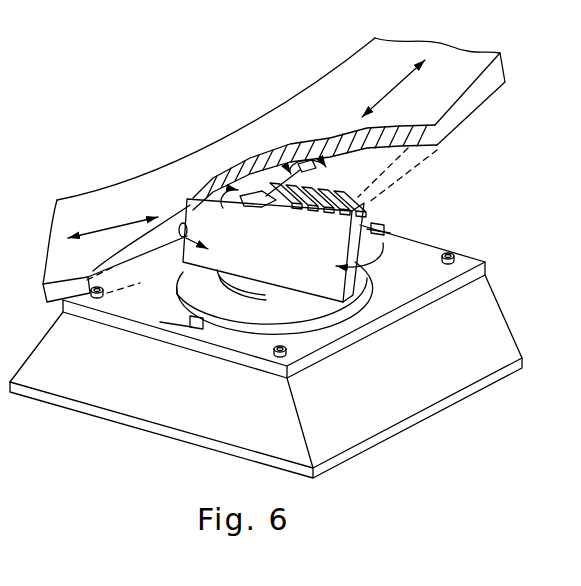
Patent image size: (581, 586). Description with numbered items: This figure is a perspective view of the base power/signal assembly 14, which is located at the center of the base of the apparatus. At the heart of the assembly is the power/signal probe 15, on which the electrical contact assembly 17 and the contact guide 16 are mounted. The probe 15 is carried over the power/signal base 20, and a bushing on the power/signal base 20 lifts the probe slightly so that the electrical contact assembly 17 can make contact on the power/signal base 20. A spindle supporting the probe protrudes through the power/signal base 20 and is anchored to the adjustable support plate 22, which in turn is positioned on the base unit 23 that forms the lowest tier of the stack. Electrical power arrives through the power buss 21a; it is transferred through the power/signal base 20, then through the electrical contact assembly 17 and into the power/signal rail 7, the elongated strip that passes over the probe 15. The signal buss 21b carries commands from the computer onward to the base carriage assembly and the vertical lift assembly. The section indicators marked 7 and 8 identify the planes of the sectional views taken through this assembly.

The base power/signal assembly 14 is at (90, 117).
The power/signal rail 7 is at (55, 175).
The section line 8- 8 is at (457, 196).
The power/signal probe 15 is at (289, 264).
The contact guide 16 is at (262, 199).
The electrical contact assembly 17 is at (333, 191).
The power/signal base 20 is at (247, 323).
The power buss 21a is at (186, 325).
The signal buss 21b is at (389, 231).
The adjustable support plate 22 is at (417, 282).
The base unit 23 is at (248, 423).